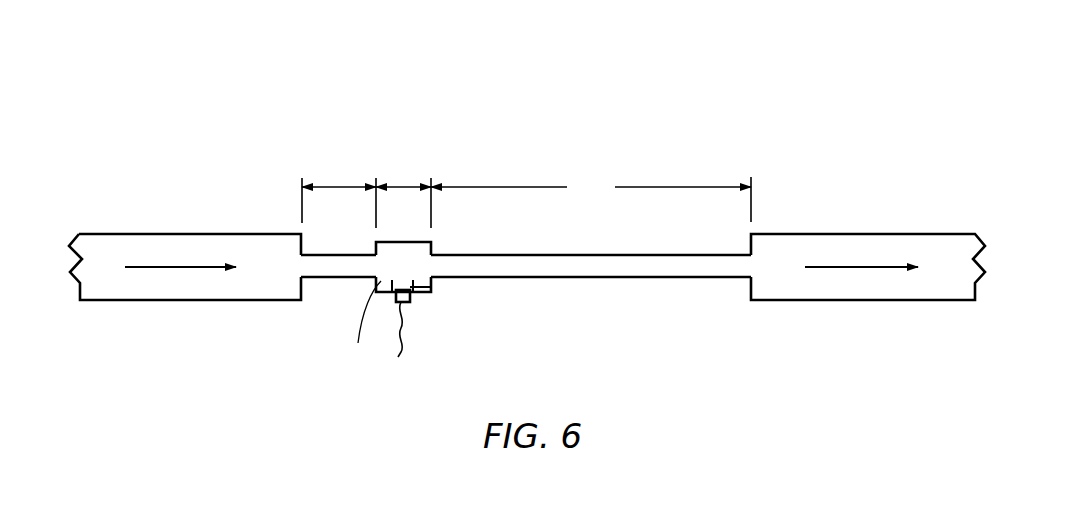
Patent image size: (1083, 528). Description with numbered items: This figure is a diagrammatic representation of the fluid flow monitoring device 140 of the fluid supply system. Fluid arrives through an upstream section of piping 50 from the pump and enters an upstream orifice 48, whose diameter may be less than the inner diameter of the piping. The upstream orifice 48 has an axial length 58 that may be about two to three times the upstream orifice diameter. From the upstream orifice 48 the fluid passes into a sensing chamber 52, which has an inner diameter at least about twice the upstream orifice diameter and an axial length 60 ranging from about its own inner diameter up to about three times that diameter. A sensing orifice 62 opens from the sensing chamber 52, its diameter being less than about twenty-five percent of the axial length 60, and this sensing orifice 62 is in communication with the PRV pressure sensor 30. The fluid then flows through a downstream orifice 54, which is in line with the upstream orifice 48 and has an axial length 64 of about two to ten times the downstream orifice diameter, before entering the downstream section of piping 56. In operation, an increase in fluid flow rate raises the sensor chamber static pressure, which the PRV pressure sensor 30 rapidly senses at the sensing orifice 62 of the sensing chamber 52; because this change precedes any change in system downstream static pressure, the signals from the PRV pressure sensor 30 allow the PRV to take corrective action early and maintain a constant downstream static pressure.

The fluid flow monitoring device 140 is at (818, 118).
The upstream section of piping 50 is at (163, 300).
The upstream orifice 48 is at (320, 277).
The sensing chamber 52 is at (425, 248).
The downstream orifice 54 is at (599, 277).
The downstream section of piping 56 is at (858, 300).
The upstream orifice axial length 58 is at (338, 187).
The sensing chamber axial length 60 is at (403, 187).
The downstream orifice axial length 64 is at (591, 198).
The sensing orifice 62 is at (431, 287).
The PRV pressure sensor 30 is at (412, 298).